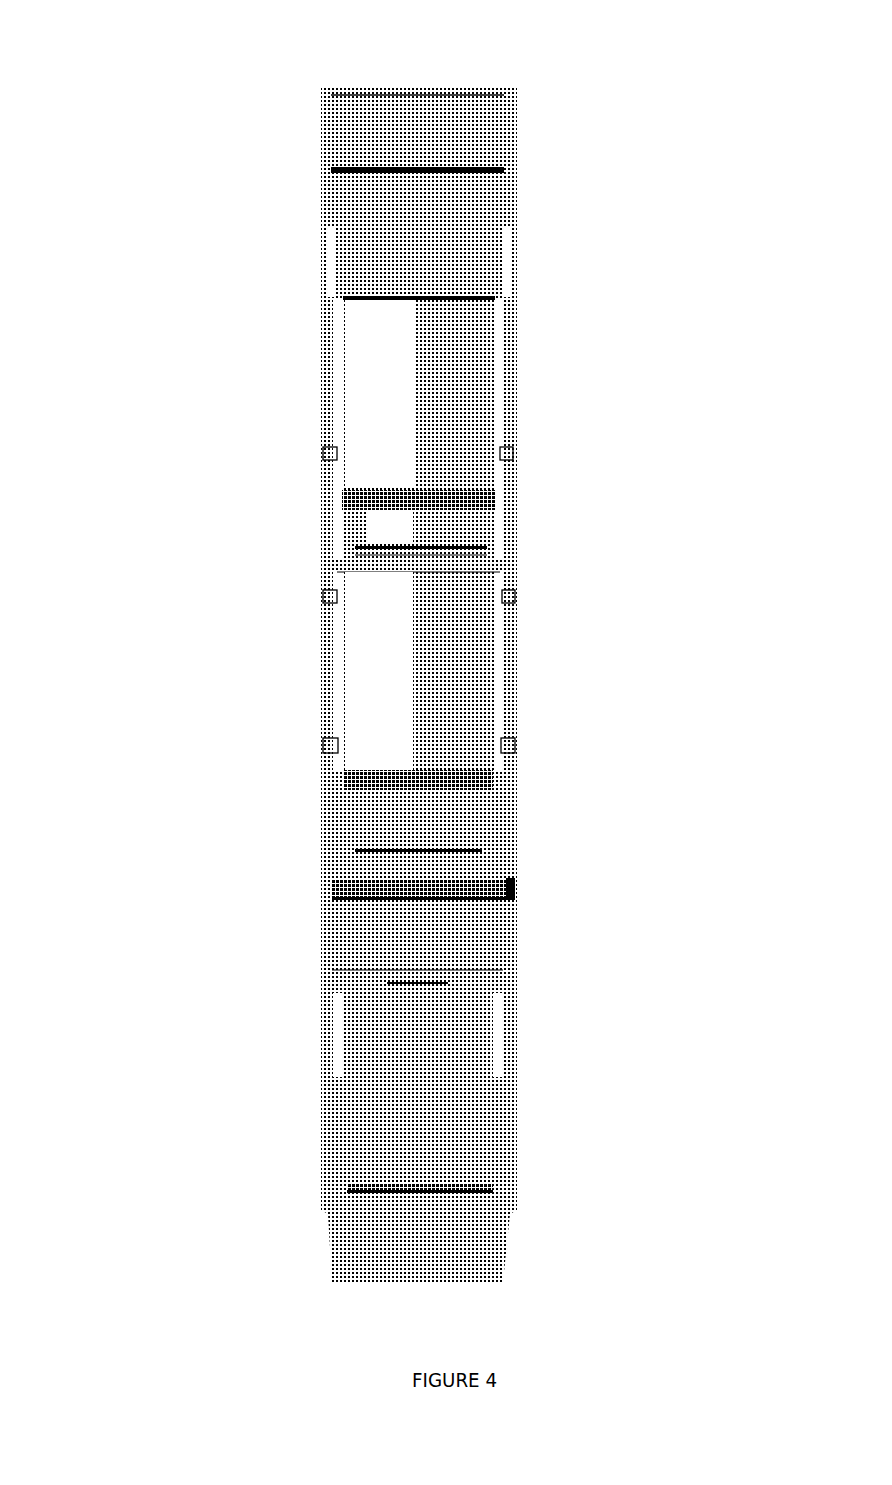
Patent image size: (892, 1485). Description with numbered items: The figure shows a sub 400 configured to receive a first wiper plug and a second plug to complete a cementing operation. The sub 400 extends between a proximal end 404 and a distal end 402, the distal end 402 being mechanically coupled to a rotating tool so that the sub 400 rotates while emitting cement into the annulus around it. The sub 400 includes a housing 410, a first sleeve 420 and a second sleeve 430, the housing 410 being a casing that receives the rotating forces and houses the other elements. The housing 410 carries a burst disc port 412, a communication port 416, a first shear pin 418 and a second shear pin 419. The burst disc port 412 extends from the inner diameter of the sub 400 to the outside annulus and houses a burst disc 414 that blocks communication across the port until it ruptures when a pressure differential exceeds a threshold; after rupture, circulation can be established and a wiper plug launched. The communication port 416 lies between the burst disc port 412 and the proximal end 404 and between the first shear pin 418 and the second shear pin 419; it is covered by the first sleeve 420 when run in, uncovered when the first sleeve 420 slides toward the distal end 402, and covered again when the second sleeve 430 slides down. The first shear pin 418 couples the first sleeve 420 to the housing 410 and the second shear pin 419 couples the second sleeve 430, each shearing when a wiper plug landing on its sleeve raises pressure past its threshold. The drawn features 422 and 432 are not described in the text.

The sub 400 is at (374, 647).
The distal end 402 is at (348, 1277).
The proximal end 404 is at (495, 87).
The housing 410 is at (323, 528).
The burst disc port 412 is at (515, 885).
The burst disc 414 is at (513, 883).
The communication port 416 is at (518, 590).
The first shear pin 418 is at (327, 743).
The second shear pin 419 is at (328, 448).
The first sleeve 420 is at (497, 700).
The shoulder 422 is at (357, 850).
The second sleeve 430 is at (497, 375).
The shoulder 432 is at (355, 548).